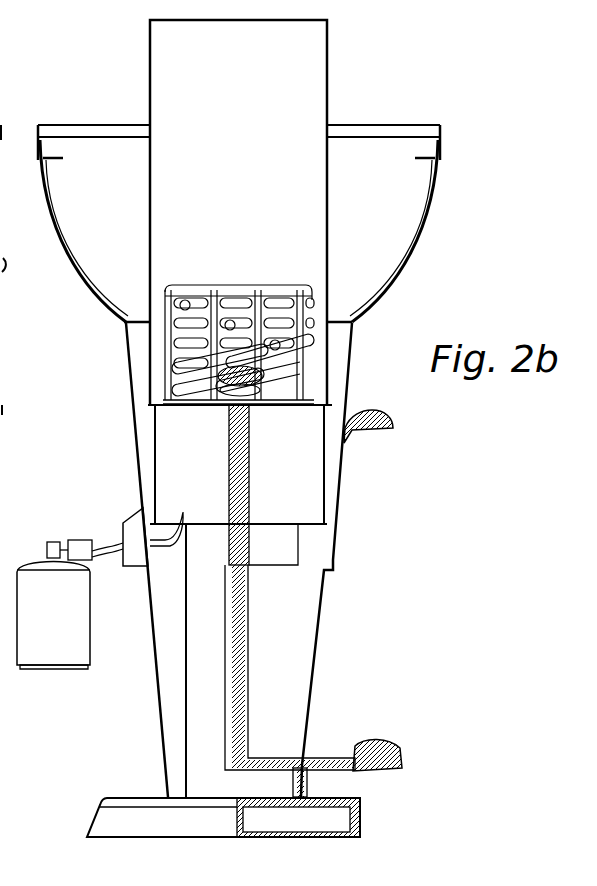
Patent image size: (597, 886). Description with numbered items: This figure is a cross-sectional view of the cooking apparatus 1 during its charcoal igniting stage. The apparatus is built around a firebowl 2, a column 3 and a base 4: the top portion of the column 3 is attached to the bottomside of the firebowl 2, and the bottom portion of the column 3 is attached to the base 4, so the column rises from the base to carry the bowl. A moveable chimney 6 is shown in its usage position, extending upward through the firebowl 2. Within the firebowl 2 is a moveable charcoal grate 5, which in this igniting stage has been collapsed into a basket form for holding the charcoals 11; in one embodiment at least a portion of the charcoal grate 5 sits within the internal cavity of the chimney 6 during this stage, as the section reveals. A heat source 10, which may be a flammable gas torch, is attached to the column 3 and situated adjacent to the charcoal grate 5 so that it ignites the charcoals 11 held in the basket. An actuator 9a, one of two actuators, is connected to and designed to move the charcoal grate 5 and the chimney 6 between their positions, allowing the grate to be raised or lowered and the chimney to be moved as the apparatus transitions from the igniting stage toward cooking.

The cooking apparatus 1 is at (358, 520).
The firebowl 2 is at (422, 228).
The column 3 is at (320, 628).
The base 4 is at (322, 830).
The charcoal grate 5 is at (305, 348).
The chimney 6 is at (318, 57).
The actuator 9a is at (385, 748).
The heat source 10 is at (40, 667).
The charcoals 11 is at (165, 372).